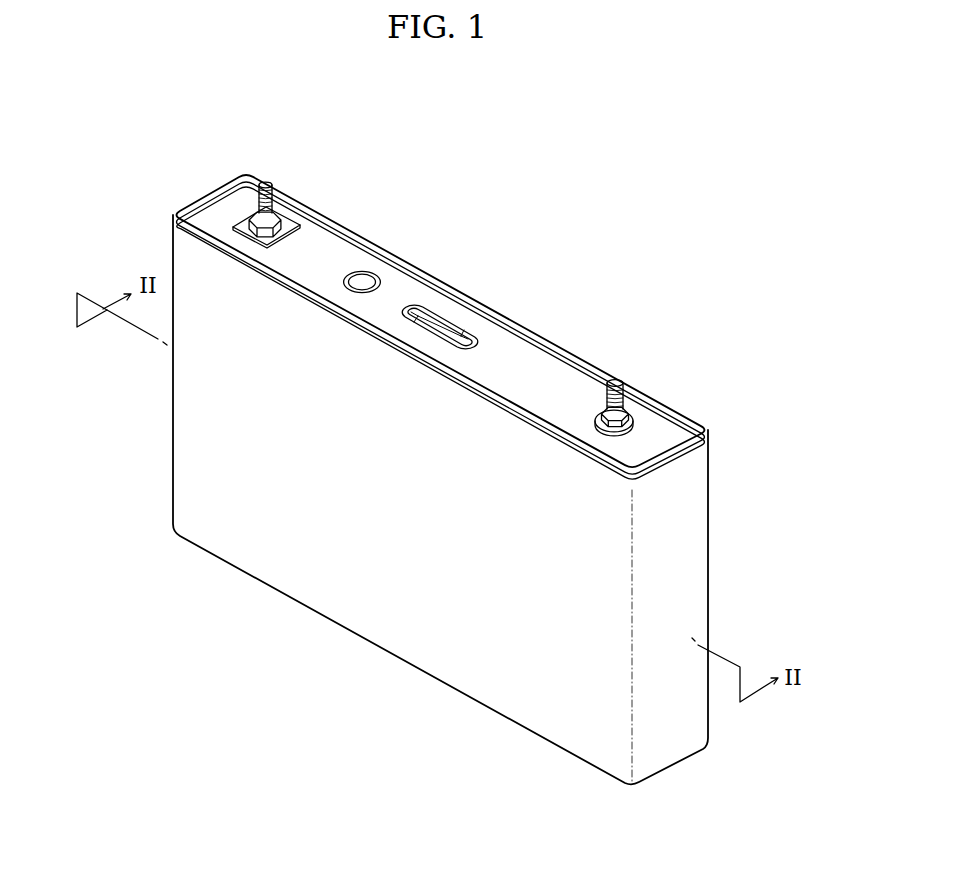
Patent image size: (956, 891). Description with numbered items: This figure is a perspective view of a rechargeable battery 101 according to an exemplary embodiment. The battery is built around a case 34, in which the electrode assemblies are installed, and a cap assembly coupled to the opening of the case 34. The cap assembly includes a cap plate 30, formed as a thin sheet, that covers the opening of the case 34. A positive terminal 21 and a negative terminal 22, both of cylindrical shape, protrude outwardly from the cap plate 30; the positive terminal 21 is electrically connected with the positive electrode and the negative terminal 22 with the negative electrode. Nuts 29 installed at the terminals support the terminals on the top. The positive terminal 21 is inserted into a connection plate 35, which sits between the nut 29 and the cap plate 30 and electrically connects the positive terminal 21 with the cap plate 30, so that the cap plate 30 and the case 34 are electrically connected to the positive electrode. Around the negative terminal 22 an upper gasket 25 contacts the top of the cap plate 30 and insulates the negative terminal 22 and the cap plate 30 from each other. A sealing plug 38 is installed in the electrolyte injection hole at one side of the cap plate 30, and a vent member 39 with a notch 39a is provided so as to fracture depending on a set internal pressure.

The rechargeable battery 101 is at (440, 479).
The positive terminal 21 is at (264, 184).
The negative terminal 22 is at (615, 383).
The upper gasket 25 is at (633, 427).
The nut 29 is at (630, 417).
The cap plate 30 is at (320, 235).
The case 34 is at (380, 628).
The connection plate 35 is at (242, 226).
The sealing plug 38 is at (362, 275).
The vent member 39 is at (433, 315).
The notch 39a is at (452, 328).